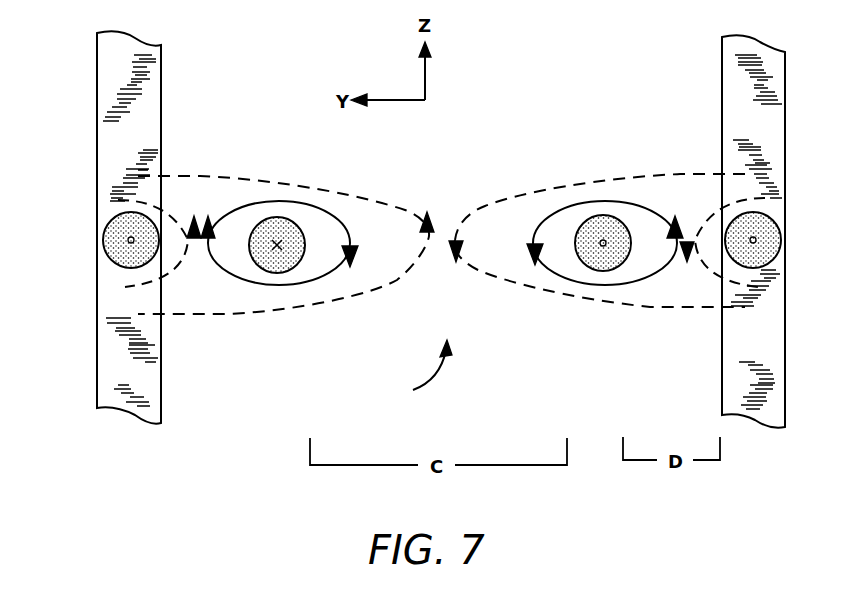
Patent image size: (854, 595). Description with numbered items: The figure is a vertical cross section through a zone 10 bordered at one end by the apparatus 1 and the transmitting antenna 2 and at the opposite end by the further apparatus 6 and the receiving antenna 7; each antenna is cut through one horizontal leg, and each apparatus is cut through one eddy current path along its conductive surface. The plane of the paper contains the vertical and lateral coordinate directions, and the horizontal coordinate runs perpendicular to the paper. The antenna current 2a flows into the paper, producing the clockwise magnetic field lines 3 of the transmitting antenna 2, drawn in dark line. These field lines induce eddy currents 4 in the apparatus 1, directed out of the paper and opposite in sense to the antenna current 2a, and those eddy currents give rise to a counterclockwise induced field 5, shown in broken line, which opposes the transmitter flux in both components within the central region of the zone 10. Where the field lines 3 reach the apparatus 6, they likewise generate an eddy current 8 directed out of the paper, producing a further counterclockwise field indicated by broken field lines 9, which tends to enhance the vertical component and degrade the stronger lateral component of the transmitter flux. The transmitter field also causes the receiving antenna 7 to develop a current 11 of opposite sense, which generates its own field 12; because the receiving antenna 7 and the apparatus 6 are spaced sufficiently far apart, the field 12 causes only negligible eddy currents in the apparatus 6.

The apparatus 1 is at (103, 360).
The transmitting antenna 2 is at (281, 215).
The antenna current 2a is at (279, 252).
The magnetic field lines 3 is at (322, 200).
The eddy currents 4 is at (118, 248).
The induced field 5 is at (177, 216).
The further apparatus 6 is at (770, 367).
The receiving antenna 7 is at (605, 268).
The eddy current 8 is at (770, 252).
The field lines 9 is at (718, 203).
The zone 10 is at (411, 376).
The current 11 is at (603, 232).
The field 12 is at (543, 226).